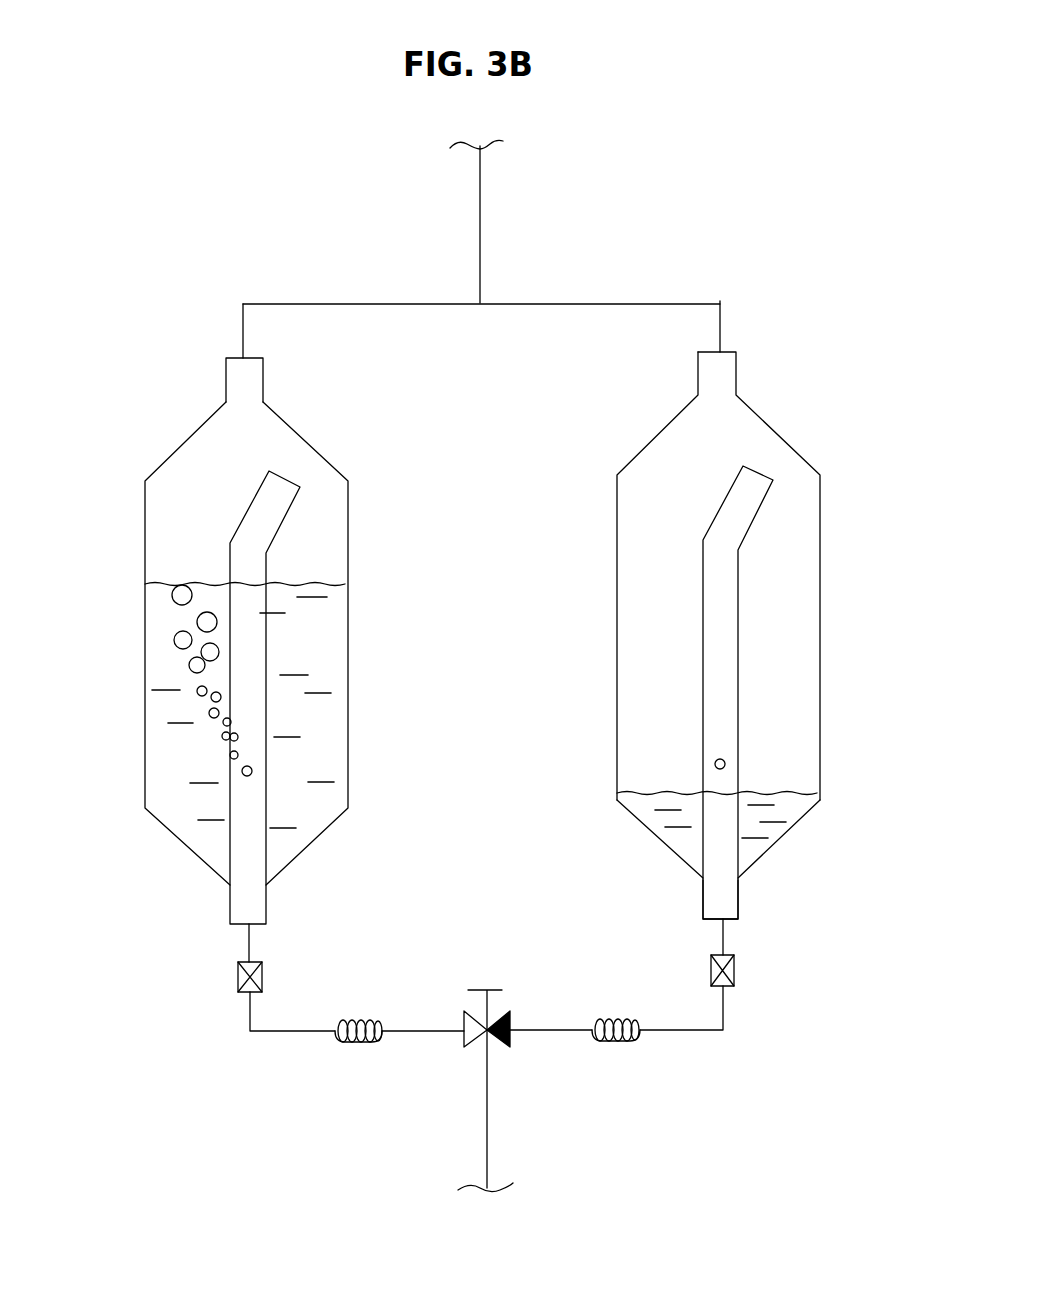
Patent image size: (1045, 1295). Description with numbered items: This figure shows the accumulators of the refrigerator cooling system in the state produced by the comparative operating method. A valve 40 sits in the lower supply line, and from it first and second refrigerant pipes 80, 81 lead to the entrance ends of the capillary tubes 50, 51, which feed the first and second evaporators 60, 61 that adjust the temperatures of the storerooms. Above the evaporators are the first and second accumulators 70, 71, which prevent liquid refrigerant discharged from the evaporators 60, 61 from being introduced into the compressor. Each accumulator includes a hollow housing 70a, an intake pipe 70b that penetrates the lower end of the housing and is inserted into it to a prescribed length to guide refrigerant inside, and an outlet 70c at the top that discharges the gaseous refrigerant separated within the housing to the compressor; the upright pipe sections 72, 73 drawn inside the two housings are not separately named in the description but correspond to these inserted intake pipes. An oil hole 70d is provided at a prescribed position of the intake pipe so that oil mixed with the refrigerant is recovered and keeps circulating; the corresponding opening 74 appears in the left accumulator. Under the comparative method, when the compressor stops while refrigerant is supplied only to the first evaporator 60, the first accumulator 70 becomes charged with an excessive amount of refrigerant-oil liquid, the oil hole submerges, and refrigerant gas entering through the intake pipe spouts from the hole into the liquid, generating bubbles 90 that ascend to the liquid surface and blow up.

The valve 40 is at (507, 1009).
The first capillary tube 50 is at (357, 1043).
The second capillary tube 51 is at (616, 1041).
The first evaporator 60 is at (263, 975).
The second evaporator 61 is at (735, 970).
The first accumulator 70 is at (187, 847).
The hollow housing 70a is at (782, 838).
The intake pipe 70b is at (740, 897).
The outlet 70c is at (264, 378).
The oil hole 70d is at (725, 760).
The second accumulator 71 is at (822, 618).
The first inner tube 72 is at (268, 805).
The second inner tube 73 is at (705, 855).
The tube hole 74 is at (240, 771).
The first refrigerant pipe 80 is at (418, 1032).
The second refrigerant pipe 81 is at (548, 1030).
The bubbles 90 is at (172, 640).